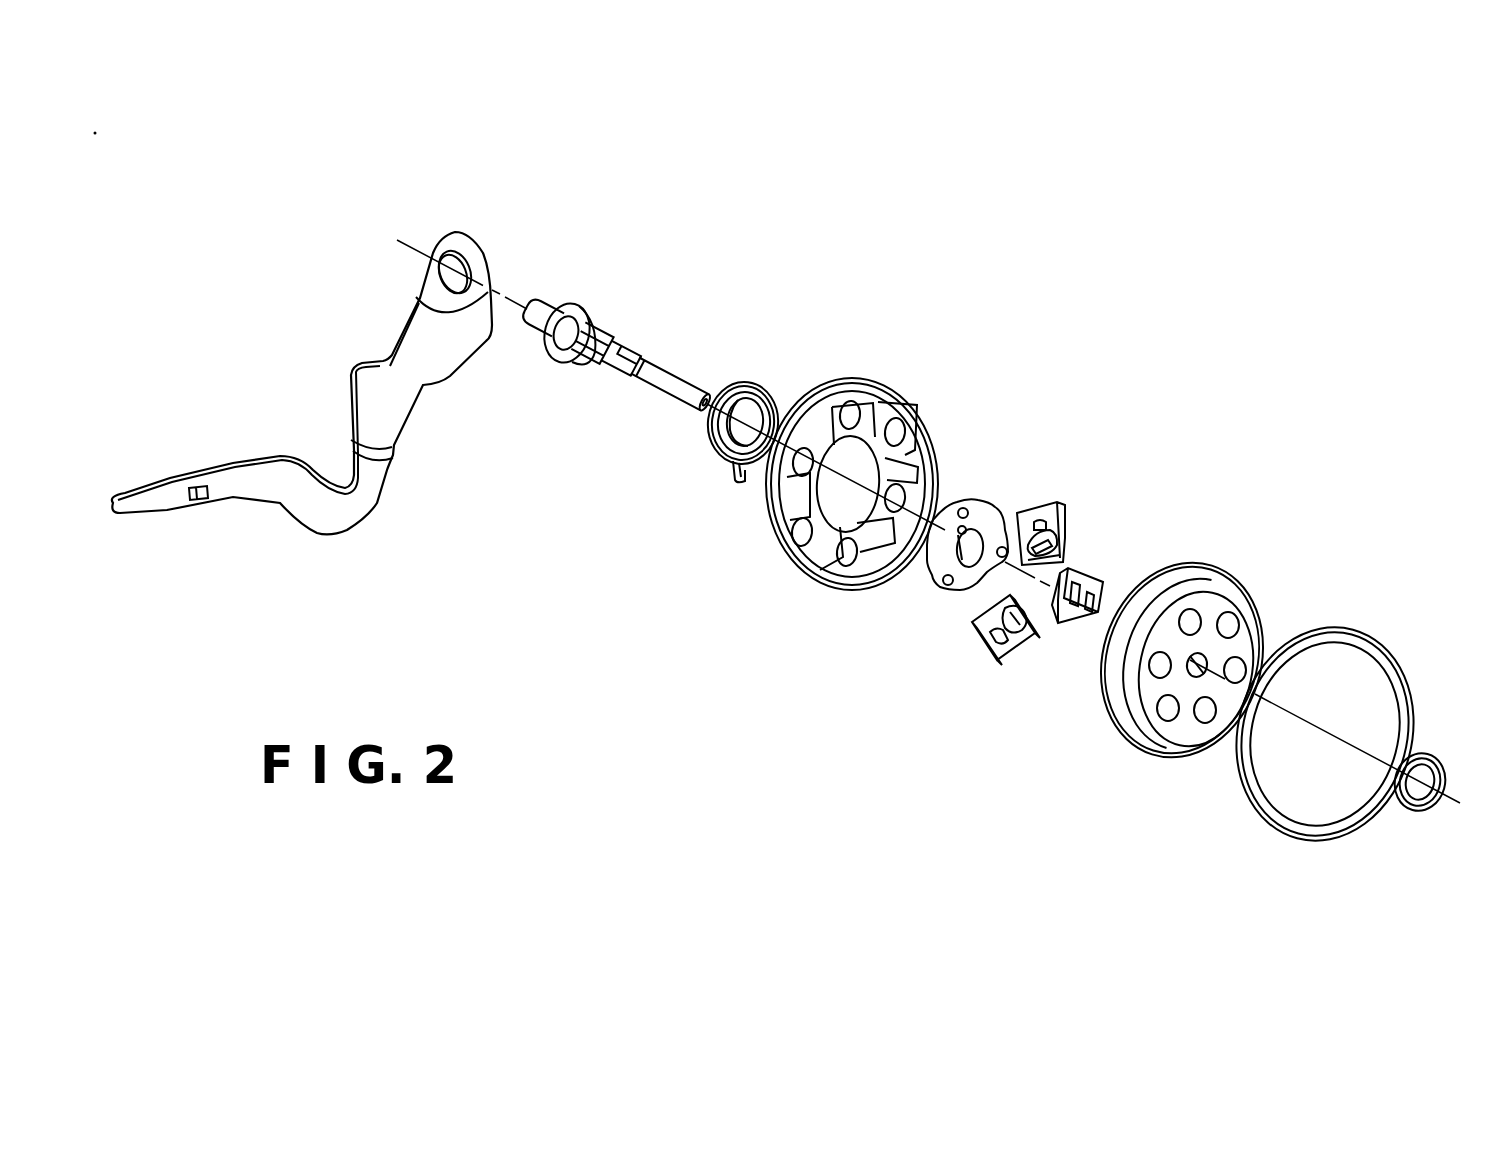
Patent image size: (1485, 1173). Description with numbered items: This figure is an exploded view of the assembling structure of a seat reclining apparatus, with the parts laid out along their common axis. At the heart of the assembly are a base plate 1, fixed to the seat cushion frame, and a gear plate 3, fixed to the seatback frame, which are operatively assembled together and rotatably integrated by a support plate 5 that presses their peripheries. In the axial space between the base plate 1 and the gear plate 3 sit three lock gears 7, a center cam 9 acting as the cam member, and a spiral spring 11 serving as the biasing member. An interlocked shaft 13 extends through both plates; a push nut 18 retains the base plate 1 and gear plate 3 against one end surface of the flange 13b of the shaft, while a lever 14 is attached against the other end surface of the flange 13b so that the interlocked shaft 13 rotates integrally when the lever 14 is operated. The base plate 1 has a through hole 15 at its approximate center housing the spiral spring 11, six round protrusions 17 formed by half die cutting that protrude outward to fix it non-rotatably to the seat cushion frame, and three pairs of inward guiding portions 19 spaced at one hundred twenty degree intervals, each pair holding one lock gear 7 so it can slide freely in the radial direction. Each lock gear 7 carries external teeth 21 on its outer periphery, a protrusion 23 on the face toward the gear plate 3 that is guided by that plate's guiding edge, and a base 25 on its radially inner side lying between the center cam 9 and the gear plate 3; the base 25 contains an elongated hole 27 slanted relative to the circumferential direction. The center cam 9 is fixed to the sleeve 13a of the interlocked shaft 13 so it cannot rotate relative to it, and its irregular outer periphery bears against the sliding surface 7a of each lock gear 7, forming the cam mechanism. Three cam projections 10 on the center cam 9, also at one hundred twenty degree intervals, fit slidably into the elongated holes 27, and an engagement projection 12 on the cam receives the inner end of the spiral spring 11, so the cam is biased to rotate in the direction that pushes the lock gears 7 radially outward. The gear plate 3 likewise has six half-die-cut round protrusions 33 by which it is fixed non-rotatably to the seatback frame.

The base plate 1 is at (864, 461).
The gear plate 3 is at (1182, 639).
The support plate 5 is at (1337, 630).
The lock gear 7 is at (1051, 548).
The sliding surface 7a is at (1062, 590).
The center cam 9 is at (982, 530).
The cam projection 10 is at (930, 545).
The spiral spring 11 is at (747, 383).
The engagement projection 12 is at (985, 522).
The interlocked shaft 13 is at (617, 273).
The sleeve 13a is at (583, 328).
The flange 13b is at (575, 303).
The lever 14 is at (353, 363).
The through hole 15 is at (857, 463).
The round protrusion 17 is at (890, 432).
The push nut 18 is at (1412, 807).
The guiding portions 19 is at (885, 405).
The external teeth 21 is at (1052, 498).
The protrusion 23 is at (1045, 520).
The base 25 is at (1062, 537).
The elongated hole 27 is at (1073, 553).
The round protrusion 33 is at (1165, 713).